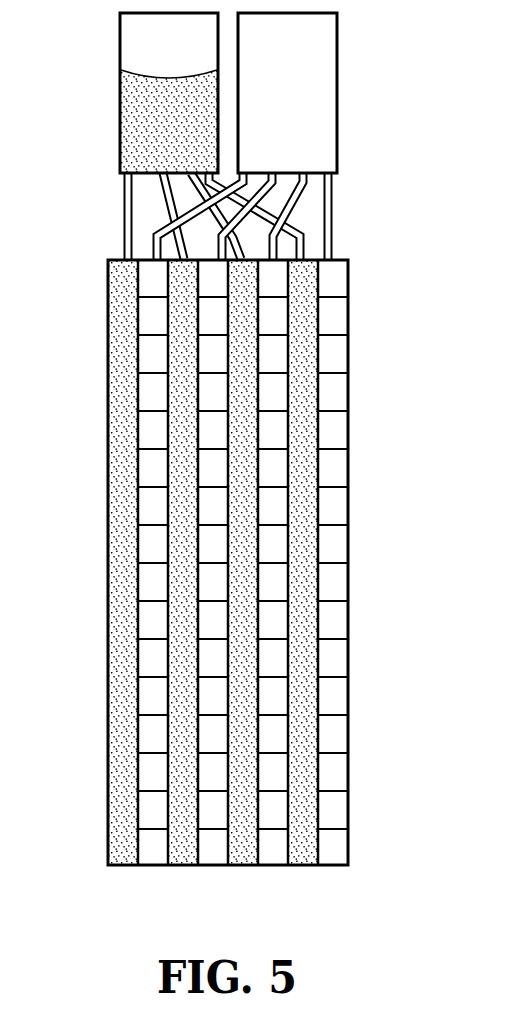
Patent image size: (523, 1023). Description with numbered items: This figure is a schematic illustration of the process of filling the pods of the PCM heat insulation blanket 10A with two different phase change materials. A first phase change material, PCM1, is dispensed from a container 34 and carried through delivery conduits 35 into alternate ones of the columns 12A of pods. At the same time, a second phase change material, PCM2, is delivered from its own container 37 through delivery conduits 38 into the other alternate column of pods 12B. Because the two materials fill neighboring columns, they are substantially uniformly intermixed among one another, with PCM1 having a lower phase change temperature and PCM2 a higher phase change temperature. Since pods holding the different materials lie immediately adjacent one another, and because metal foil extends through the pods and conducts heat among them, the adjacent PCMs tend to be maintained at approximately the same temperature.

The PCM heat insulation blanket 10A is at (100, 596).
The columns 12A is at (243, 862).
The column of pods 12B is at (333, 862).
The container 34 is at (120, 88).
The delivery conduits 35 is at (160, 193).
The container 37 is at (318, 58).
The delivery conduits 38 is at (324, 224).